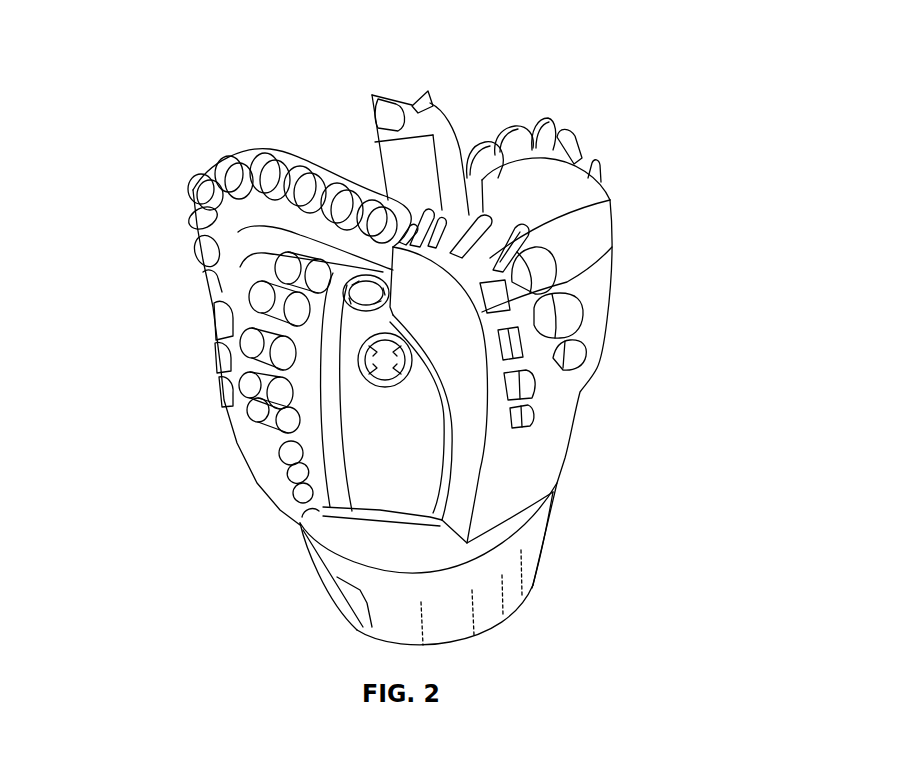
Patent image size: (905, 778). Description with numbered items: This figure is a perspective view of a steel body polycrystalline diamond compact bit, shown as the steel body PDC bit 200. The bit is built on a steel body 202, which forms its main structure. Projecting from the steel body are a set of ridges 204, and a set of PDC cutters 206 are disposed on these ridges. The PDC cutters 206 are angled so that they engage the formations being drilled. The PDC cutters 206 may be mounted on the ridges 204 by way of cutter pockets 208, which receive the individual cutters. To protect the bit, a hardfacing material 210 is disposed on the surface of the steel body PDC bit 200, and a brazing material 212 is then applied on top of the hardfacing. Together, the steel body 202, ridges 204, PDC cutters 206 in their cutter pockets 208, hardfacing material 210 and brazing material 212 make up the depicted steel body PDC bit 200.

The steel body PDC bit 200 is at (411, 326).
The steel body 202 is at (402, 368).
The ridges 204 is at (257, 262).
The PDC cutters 206 is at (287, 310).
The cutter pockets 208 is at (263, 360).
The hardfacing material 210 is at (497, 269).
The brazing material 212 is at (567, 282).